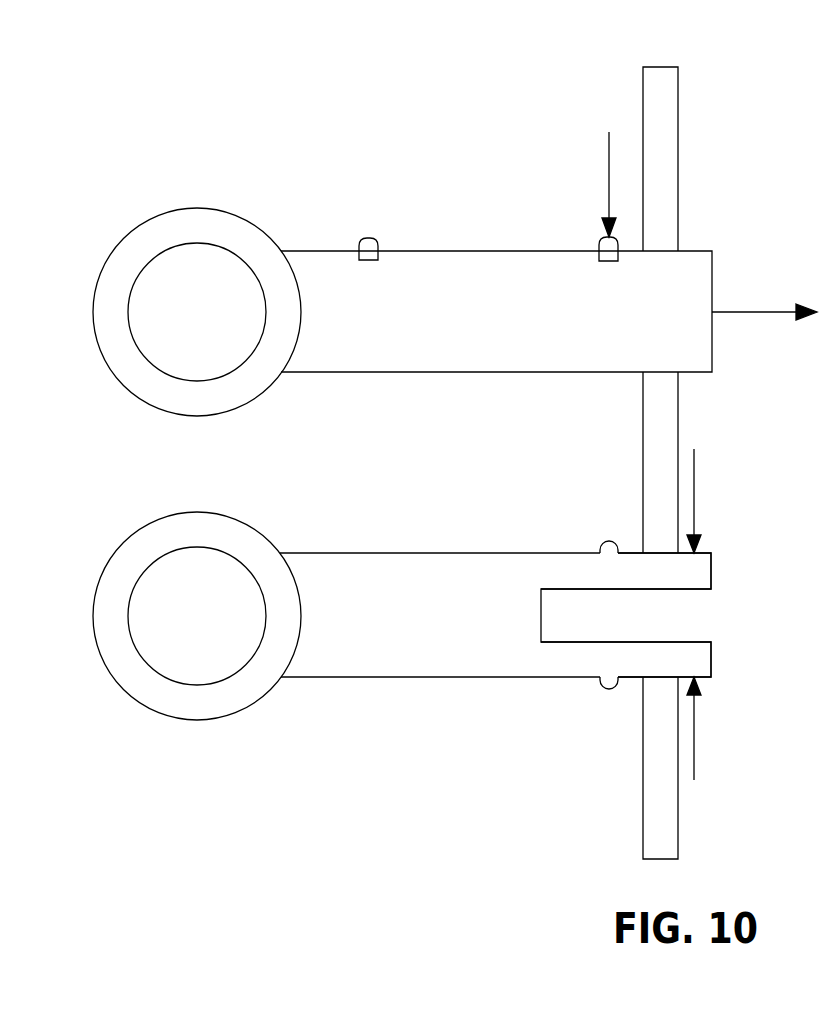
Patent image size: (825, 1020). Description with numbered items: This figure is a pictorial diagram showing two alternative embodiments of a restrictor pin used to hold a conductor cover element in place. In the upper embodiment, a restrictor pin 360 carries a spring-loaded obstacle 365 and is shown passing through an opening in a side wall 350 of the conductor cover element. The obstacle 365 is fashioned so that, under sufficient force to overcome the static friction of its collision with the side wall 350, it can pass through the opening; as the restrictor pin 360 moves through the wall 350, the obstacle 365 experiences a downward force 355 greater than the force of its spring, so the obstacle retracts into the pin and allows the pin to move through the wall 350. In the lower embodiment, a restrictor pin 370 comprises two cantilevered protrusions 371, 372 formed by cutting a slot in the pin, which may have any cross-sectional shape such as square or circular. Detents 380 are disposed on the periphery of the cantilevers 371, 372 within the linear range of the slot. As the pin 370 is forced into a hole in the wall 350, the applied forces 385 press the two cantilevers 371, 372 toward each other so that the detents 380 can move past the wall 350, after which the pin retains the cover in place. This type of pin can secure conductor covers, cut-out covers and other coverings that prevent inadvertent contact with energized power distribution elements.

The side wall 350 is at (678, 155).
The downward force 355 is at (608, 152).
The restrictor pin 360 is at (470, 250).
The spring-loaded obstacle 365 is at (367, 237).
The restrictor pin 370 is at (470, 552).
The cantilevered protrusion 371 is at (711, 570).
The cantilevered protrusion 372 is at (711, 659).
The bumps on forked arm 380 is at (605, 540).
The applied forces 385 is at (694, 495).